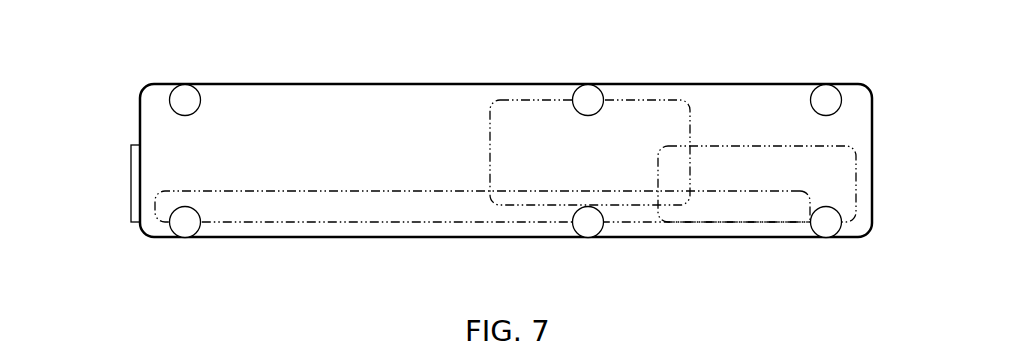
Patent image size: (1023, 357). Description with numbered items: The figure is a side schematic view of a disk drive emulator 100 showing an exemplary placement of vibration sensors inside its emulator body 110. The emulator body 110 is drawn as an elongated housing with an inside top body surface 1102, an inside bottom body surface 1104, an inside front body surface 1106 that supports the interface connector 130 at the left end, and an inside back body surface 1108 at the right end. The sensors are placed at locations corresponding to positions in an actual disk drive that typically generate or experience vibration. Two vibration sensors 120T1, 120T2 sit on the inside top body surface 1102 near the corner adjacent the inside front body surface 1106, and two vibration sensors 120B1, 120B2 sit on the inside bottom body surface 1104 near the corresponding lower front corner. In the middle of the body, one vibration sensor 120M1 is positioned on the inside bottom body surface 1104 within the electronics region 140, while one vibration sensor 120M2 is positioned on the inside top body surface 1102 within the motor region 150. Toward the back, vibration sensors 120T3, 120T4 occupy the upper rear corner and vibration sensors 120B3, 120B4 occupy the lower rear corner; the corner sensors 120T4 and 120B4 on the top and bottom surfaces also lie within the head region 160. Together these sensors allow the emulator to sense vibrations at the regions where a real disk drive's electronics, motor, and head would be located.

The disk drive emulator 100 is at (509, 171).
The emulator body 110 is at (472, 184).
The interface connector 130 is at (132, 189).
The electronics region 140 is at (362, 192).
The motor region 150 is at (689, 103).
The head region 160 is at (857, 212).
The inside top body surface 1102 is at (430, 89).
The inside bottom body surface 1104 is at (278, 230).
The inside front body surface 1106 is at (149, 140).
The inside back body surface 1108 is at (865, 127).
The vibration sensor 120T1 is at (243, 66).
The vibration sensor 120T2 is at (183, 85).
The vibration sensor 120M2 is at (588, 85).
The vibration sensor 120T3 is at (903, 88).
The vibration sensor 120T4 is at (842, 98).
The vibration sensor 120B1 is at (236, 267).
The vibration sensor 120B2 is at (185, 238).
The vibration sensor 120M1 is at (600, 240).
The vibration sensor 120B3 is at (896, 267).
The vibration sensor 120B4 is at (826, 238).